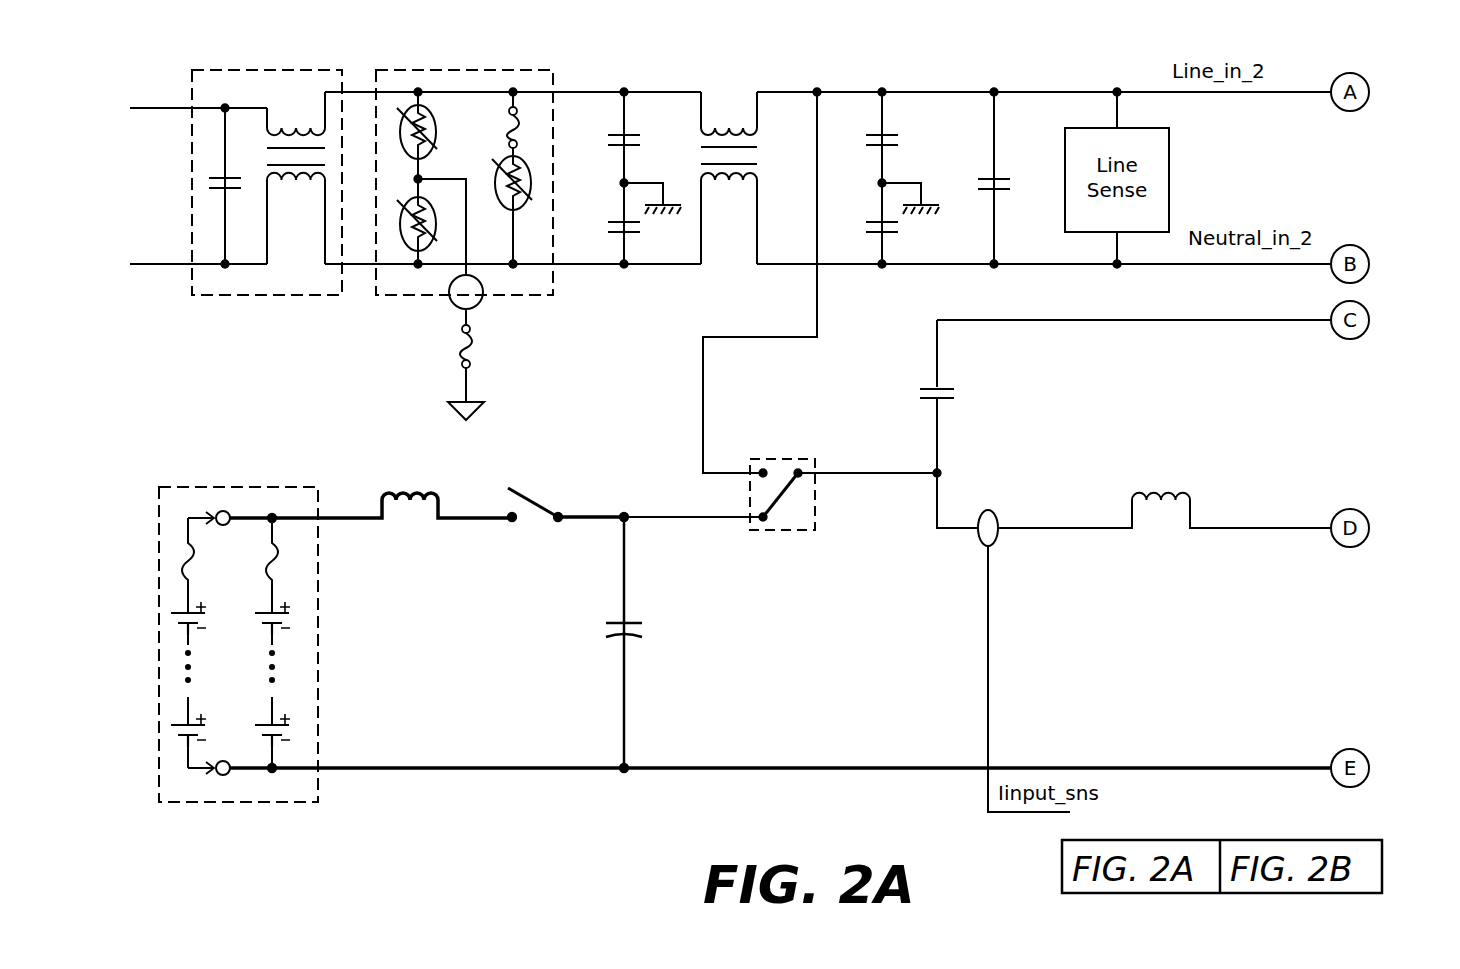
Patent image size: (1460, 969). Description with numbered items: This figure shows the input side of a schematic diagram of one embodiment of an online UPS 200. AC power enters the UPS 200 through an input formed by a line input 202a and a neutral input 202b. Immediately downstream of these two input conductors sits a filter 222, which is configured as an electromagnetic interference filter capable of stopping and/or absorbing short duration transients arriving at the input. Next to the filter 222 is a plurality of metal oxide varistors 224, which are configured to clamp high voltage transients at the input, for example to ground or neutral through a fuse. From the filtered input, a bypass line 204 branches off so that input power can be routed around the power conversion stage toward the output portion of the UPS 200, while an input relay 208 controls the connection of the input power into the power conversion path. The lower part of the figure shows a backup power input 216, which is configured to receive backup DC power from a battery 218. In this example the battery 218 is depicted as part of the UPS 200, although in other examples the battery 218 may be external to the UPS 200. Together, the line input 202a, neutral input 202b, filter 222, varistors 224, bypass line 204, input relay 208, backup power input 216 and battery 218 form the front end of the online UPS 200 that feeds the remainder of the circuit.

The online UPS 200 is at (1334, 44).
The line input 202a is at (165, 110).
The neutral input 202b is at (165, 268).
The bypass line 204 is at (852, 92).
The input relay 208 is at (788, 459).
The backup power input 216 is at (322, 520).
The battery 218 is at (230, 487).
The filter 222 is at (273, 70).
The plurality of metal oxide varistors 224 is at (427, 70).